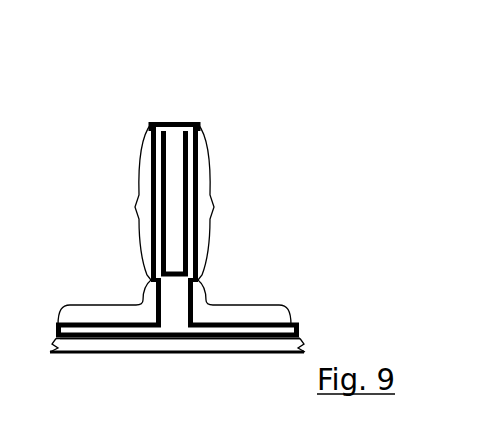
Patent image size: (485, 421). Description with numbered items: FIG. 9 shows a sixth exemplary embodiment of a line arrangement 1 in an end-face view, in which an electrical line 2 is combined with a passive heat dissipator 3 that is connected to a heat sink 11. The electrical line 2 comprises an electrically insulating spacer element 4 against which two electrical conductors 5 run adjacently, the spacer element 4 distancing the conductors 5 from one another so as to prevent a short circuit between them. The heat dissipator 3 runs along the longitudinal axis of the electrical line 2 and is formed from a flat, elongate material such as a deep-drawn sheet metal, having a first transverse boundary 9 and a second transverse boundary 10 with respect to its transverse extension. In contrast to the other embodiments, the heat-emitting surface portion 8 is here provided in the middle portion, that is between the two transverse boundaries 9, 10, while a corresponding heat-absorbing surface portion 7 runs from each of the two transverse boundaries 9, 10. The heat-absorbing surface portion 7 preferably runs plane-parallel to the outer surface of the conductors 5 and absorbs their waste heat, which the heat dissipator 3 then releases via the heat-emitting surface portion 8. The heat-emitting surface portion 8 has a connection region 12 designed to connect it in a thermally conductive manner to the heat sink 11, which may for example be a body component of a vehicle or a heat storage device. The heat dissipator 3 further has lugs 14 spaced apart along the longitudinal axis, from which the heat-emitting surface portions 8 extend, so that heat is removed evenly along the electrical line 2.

The line arrangement 1 is at (297, 177).
The electrical line 2 is at (161, 116).
The passive heat dissipator 3 is at (193, 346).
The electrically insulating spacer element 4 is at (207, 80).
The electrical conductors 5 is at (177, 125).
The heat-absorbing surface portion 7 is at (214, 207).
The heat-emitting surface portion 8 is at (259, 304).
The first transverse boundary 9 is at (153, 122).
The second transverse boundary 10 is at (196, 121).
The heat sink 11 is at (60, 354).
The connection region 12 is at (255, 347).
The lugs 14 is at (174, 340).